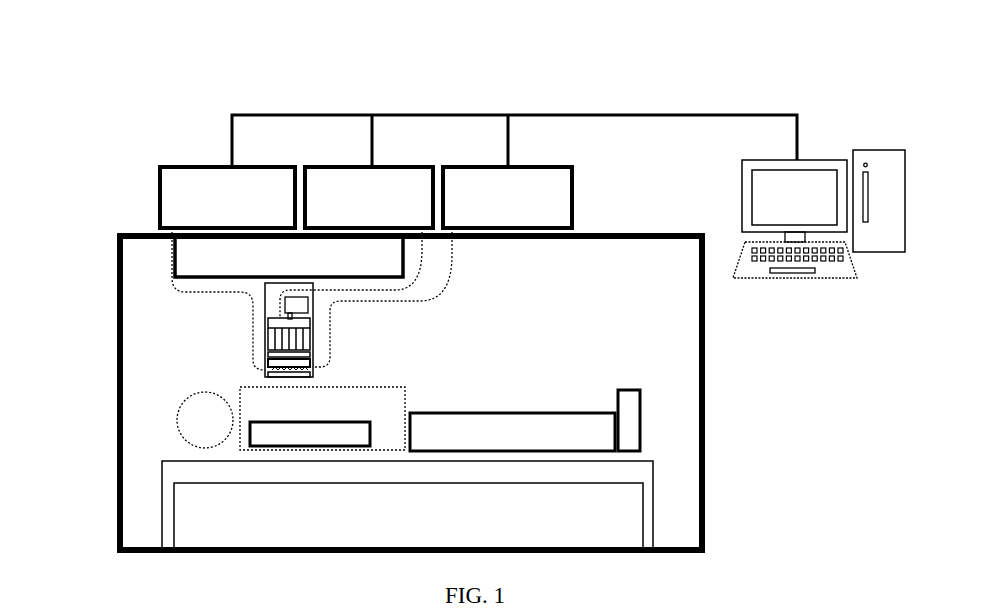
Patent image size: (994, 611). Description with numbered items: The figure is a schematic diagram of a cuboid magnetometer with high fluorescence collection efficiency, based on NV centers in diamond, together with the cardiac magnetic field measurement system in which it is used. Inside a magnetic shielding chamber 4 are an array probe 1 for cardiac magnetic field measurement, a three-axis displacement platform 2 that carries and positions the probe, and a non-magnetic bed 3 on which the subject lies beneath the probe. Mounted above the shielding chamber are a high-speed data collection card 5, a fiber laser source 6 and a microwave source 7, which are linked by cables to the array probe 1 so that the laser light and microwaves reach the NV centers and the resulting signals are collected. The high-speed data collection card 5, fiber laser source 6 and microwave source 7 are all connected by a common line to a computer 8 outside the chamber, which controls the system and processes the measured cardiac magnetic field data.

The array probe 1 is at (267, 302).
The three-axis displacement platform 2 is at (172, 284).
The non-magnetic bed 3 is at (162, 483).
The magnetic shielding chamber 4 is at (703, 515).
The high-speed data collection card 5 is at (160, 210).
The fiber laser source 6 is at (372, 167).
The microwave source 7 is at (508, 167).
The computer 8 is at (793, 280).